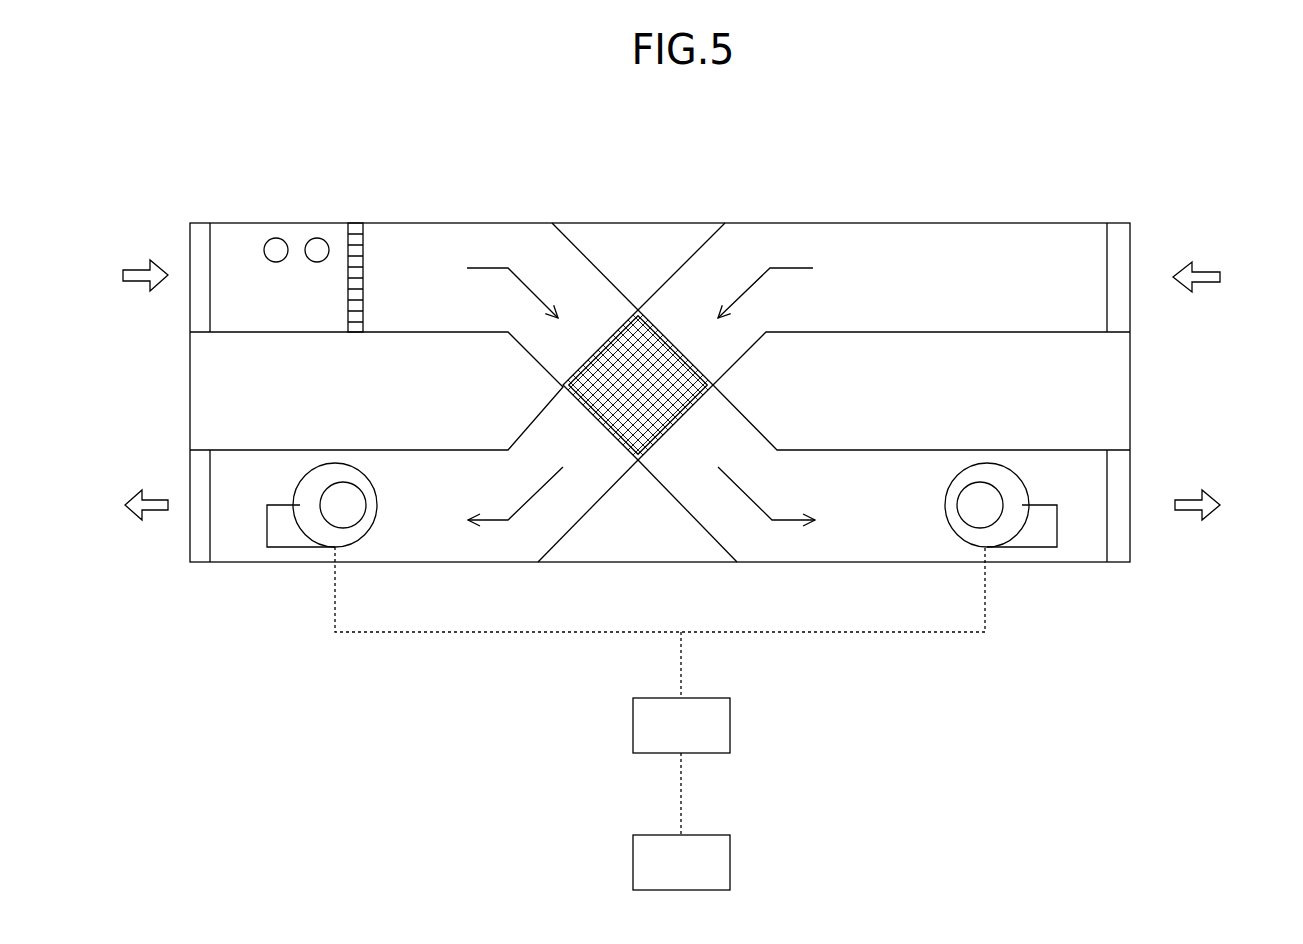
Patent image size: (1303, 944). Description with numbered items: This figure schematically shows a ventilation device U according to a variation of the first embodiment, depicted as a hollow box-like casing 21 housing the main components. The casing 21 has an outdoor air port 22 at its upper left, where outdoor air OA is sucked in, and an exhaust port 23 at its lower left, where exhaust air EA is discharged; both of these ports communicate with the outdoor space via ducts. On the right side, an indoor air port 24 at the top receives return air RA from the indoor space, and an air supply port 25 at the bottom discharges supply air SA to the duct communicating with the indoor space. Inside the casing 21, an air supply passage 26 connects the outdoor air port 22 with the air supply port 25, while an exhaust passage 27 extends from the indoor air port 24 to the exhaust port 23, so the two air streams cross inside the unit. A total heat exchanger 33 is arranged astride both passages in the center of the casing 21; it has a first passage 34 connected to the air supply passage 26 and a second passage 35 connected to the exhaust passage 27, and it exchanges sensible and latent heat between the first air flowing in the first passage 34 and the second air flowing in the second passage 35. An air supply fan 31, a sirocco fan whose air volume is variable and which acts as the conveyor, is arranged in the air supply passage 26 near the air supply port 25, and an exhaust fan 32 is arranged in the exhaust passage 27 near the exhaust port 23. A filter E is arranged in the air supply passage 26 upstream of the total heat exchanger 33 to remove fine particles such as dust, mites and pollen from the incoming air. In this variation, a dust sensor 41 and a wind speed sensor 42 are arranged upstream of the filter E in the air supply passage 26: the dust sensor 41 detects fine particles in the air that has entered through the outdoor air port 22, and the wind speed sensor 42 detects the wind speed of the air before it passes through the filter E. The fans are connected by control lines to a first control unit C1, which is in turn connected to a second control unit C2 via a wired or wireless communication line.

The casing 21 is at (517, 222).
The outdoor air port 22 is at (200, 222).
The exhaust port 23 is at (200, 565).
The indoor air port 24 is at (1118, 222).
The air supply port 25 is at (1118, 565).
The air supply passage 26 is at (430, 245).
The exhaust passage 27 is at (411, 537).
The air supply fan 31 is at (1028, 480).
The exhaust fan 32 is at (377, 490).
The total heat exchanger 33 is at (638, 307).
The first passage 34 is at (605, 354).
The second passage 35 is at (608, 426).
The dust sensor 41 is at (317, 238).
The wind speed sensor 42 is at (276, 238).
The ventilation device U is at (275, 155).
The filter E is at (357, 222).
The first control unit C1 is at (633, 727).
The second control unit C2 is at (633, 857).
The outdoor air OA is at (118, 275).
The exhaust air EA is at (121, 505).
The return air RA is at (1226, 275).
The supply air SA is at (1229, 505).